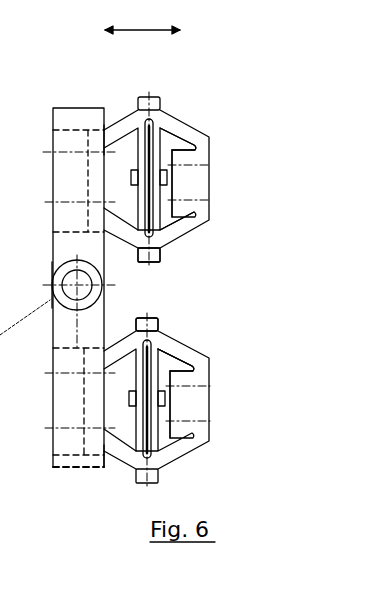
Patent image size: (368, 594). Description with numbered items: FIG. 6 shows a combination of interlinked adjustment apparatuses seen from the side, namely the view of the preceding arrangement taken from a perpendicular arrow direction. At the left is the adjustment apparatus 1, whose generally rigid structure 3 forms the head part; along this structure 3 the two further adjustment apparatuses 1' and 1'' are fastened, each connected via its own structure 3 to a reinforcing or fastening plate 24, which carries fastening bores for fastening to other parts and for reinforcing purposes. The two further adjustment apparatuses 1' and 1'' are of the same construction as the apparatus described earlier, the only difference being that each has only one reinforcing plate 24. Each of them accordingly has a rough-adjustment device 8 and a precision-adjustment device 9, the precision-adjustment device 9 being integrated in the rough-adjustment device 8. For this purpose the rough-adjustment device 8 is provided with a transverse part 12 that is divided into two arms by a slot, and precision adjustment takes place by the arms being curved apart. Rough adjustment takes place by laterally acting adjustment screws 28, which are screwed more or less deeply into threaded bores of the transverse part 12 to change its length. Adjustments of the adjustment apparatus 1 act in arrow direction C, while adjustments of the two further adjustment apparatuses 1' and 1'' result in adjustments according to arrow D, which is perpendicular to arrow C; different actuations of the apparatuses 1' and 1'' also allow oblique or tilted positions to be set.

The adjustment apparatus 1 is at (59, 331).
The further adjustment apparatus 1' is at (175, 165).
The further adjustment apparatus 1'' is at (176, 407).
The structure 3 is at (88, 176).
The rough-adjustment device 8 is at (118, 120).
The precision-adjustment device 9 is at (183, 159).
The transverse part 12 is at (163, 347).
The reinforcing plate 24 is at (187, 180).
The adjustment screw 28 is at (148, 315).
The arrow direction C is at (28, 273).
The arrow direction D is at (138, 35).